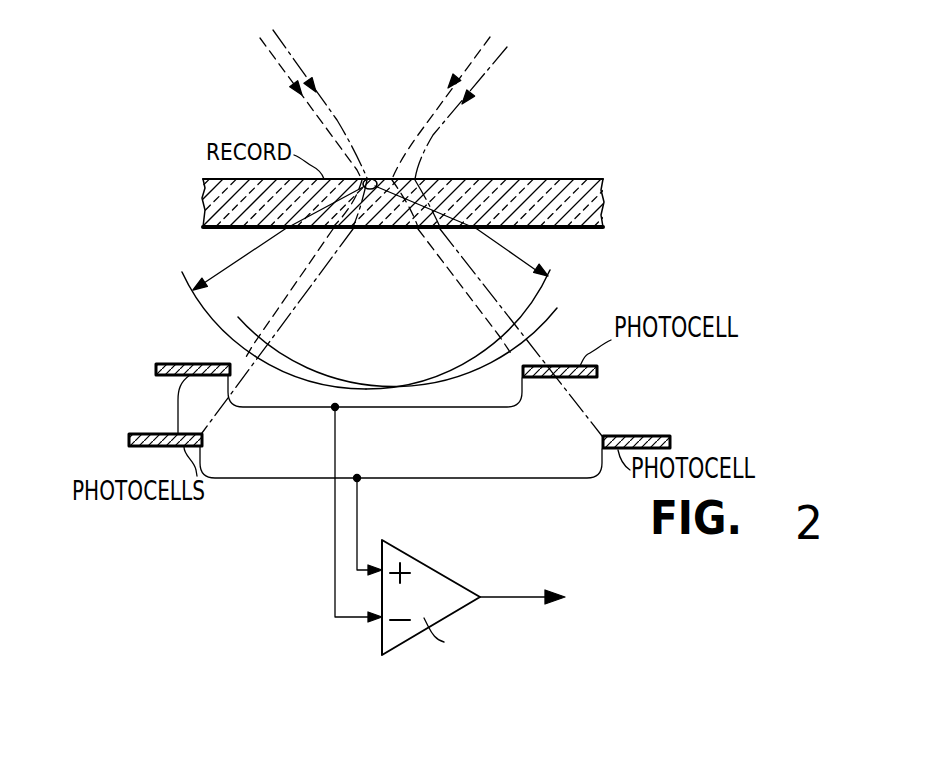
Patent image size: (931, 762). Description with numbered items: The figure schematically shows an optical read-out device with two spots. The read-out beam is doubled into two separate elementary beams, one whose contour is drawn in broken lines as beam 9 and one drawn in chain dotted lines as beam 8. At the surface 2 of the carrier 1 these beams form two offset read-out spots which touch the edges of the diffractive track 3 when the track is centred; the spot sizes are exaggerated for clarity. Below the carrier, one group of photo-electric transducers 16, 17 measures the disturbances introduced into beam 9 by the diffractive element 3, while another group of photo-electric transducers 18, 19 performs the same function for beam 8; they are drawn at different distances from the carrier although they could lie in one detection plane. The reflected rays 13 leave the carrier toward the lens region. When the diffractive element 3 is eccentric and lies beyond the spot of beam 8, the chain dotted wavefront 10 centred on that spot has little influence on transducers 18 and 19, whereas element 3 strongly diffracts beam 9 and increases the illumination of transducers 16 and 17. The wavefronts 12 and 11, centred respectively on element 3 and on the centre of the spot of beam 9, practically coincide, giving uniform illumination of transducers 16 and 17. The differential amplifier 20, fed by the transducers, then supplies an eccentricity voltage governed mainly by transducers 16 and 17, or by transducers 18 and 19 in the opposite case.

The carrier 1 is at (604, 206).
The surface 2 is at (578, 179).
The diffractive track 3 is at (374, 179).
The elementary beam 8 is at (296, 50).
The elementary beam 9 is at (270, 52).
The wavefront 10 is at (366, 329).
The wavefront 11 is at (538, 298).
The wavefront 12 is at (184, 284).
The reflected beam 13 is at (236, 260).
The photo-electric transducer 16 is at (158, 362).
The photo-electric transducer 17 is at (597, 366).
The photo-electric transducer 18 is at (158, 433).
The photo-electric transducer 19 is at (642, 436).
The amplifier 20 is at (446, 574).